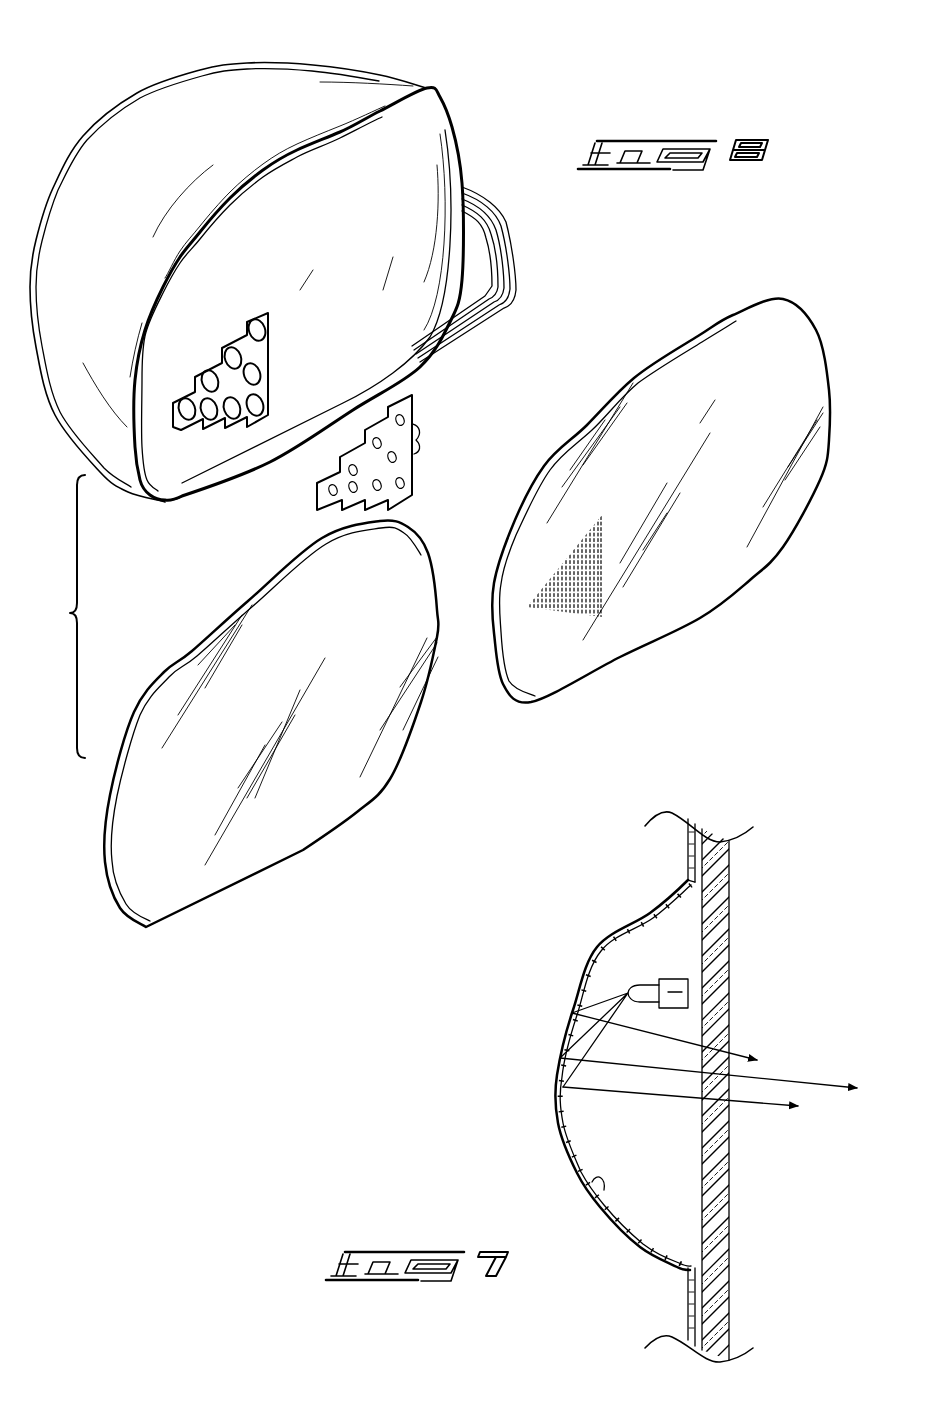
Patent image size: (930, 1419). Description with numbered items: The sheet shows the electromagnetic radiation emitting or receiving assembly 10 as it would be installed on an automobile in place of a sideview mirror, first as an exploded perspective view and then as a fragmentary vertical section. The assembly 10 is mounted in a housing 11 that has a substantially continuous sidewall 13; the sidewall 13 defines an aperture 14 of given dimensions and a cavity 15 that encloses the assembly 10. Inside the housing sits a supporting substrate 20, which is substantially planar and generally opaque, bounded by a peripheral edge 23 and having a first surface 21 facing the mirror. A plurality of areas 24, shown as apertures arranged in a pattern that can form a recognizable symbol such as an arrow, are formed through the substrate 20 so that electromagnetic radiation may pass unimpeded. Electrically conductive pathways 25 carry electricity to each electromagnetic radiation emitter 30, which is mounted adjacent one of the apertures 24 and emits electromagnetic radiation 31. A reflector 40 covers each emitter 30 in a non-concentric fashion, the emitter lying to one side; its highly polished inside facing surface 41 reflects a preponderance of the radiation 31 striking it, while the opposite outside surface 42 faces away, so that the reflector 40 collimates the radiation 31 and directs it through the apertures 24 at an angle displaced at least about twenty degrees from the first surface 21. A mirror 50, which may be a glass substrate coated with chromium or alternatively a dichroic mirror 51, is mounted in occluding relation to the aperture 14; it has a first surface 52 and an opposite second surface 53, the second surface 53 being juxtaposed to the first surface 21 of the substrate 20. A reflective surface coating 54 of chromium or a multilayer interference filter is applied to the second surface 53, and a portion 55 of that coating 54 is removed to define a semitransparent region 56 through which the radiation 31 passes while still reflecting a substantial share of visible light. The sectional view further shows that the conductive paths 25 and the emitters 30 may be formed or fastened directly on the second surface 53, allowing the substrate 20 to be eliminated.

In FIG. 8, the electromagnetic radiation emitting or receiving assembly 10 is at (430, 477).
In FIG. 8, the housing 11 is at (273, 283).
In FIG. 8, the sidewall 13 is at (100, 158).
In FIG. 8, the aperture 14 is at (296, 155).
In FIG. 8, the cavity 15 is at (180, 455).
In FIG. 8, the supporting substrate 20 is at (390, 453).
In FIG. 8, the first surface 21 is at (340, 482).
In FIG. 8, the peripheral edge 23 is at (325, 510).
In FIG. 8, the areas 24 is at (405, 481).
In FIG. 7, the electrically conductive pathways 25 is at (692, 923).
In FIG. 7, the electromagnetic radiation emitter 30 is at (682, 977).
In FIG. 7, the electromagnetic radiation 31 is at (615, 1067).
In FIG. 8, the reflector 40 is at (214, 331).
In FIG. 7, the reflector 40 is at (682, 1059).
In FIG. 8, the inside facing surface 41 is at (215, 372).
In FIG. 7, the inside facing surface 41 is at (598, 1202).
In FIG. 7, the outside surface 42 is at (600, 940).
In FIG. 8, the mirror 50 is at (661, 517).
In FIG. 7, the mirror 50 is at (713, 1270).
In FIG. 8, the dichroic mirror 51 is at (333, 793).
In FIG. 7, the dichroic mirror 51 is at (748, 1280).
In FIG. 8, the first surface 52 is at (623, 627).
In FIG. 7, the first surface 52 is at (730, 967).
In FIG. 8, the second surface 53 is at (710, 330).
In FIG. 7, the second surface 53 is at (704, 1162).
In FIG. 7, the reflective surface coating 54 is at (715, 832).
In FIG. 8, the portion 55 is at (576, 592).
In FIG. 8, the semitransparent region 56 is at (548, 616).